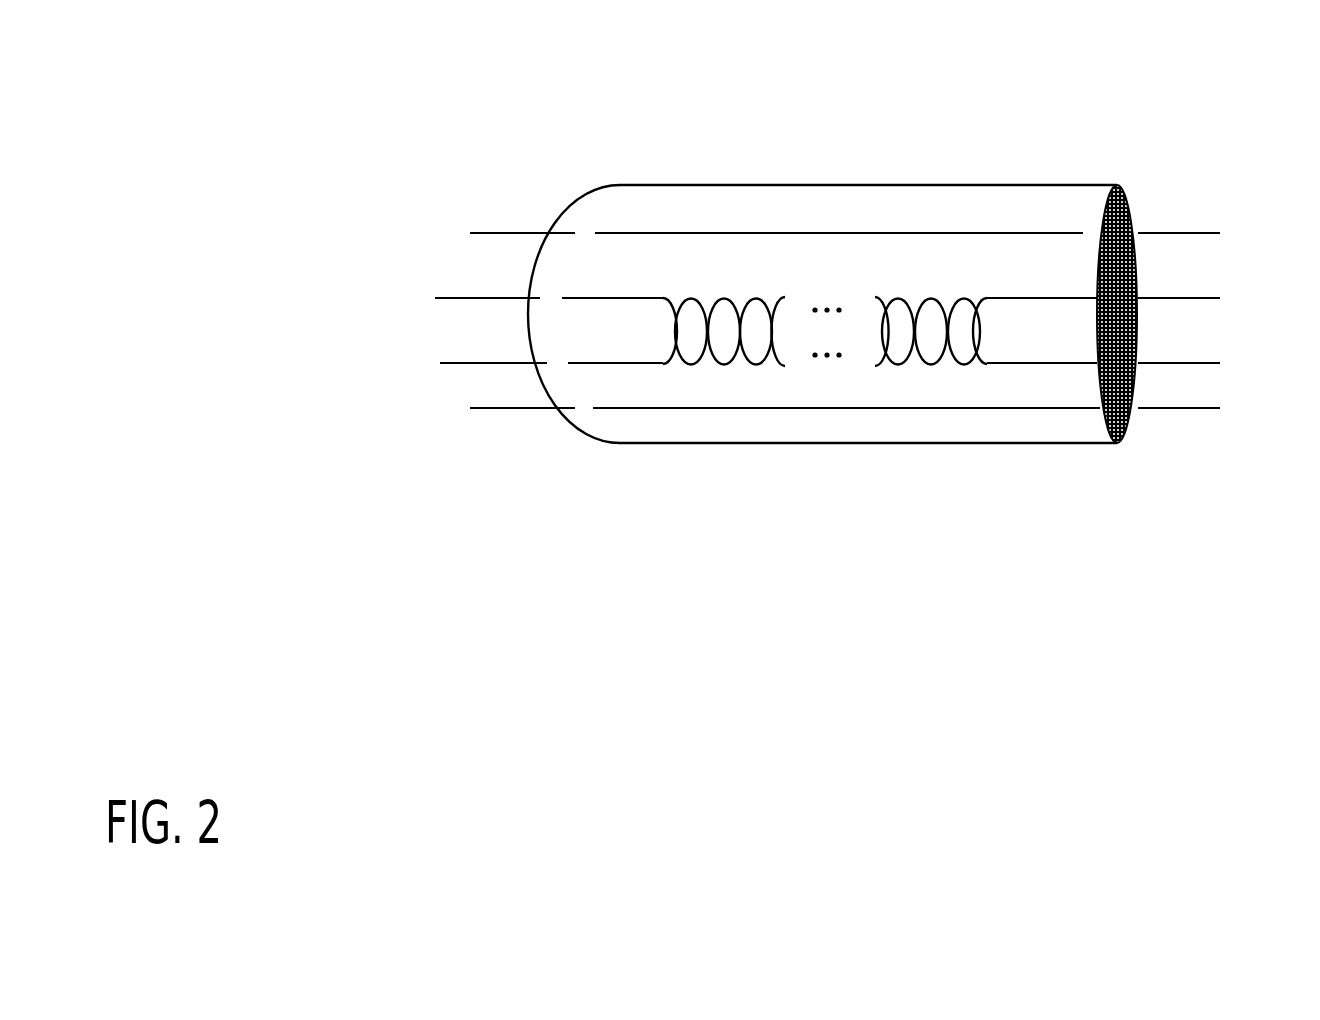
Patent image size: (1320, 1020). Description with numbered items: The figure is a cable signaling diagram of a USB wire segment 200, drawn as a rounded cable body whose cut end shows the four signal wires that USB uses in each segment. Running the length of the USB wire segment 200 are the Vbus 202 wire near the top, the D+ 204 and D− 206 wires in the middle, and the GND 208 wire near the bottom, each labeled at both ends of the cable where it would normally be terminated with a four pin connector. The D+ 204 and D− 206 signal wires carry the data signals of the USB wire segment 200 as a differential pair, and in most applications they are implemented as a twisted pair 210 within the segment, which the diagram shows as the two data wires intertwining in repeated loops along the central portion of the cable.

The USB wire segment 200 is at (673, 444).
The Vbus signal wire 202 is at (662, 232).
The D+ signal wire 204 is at (520, 298).
The D− signal wire 206 is at (528, 362).
The GND signal wire 208 is at (510, 409).
The twisted pair 210 is at (932, 364).